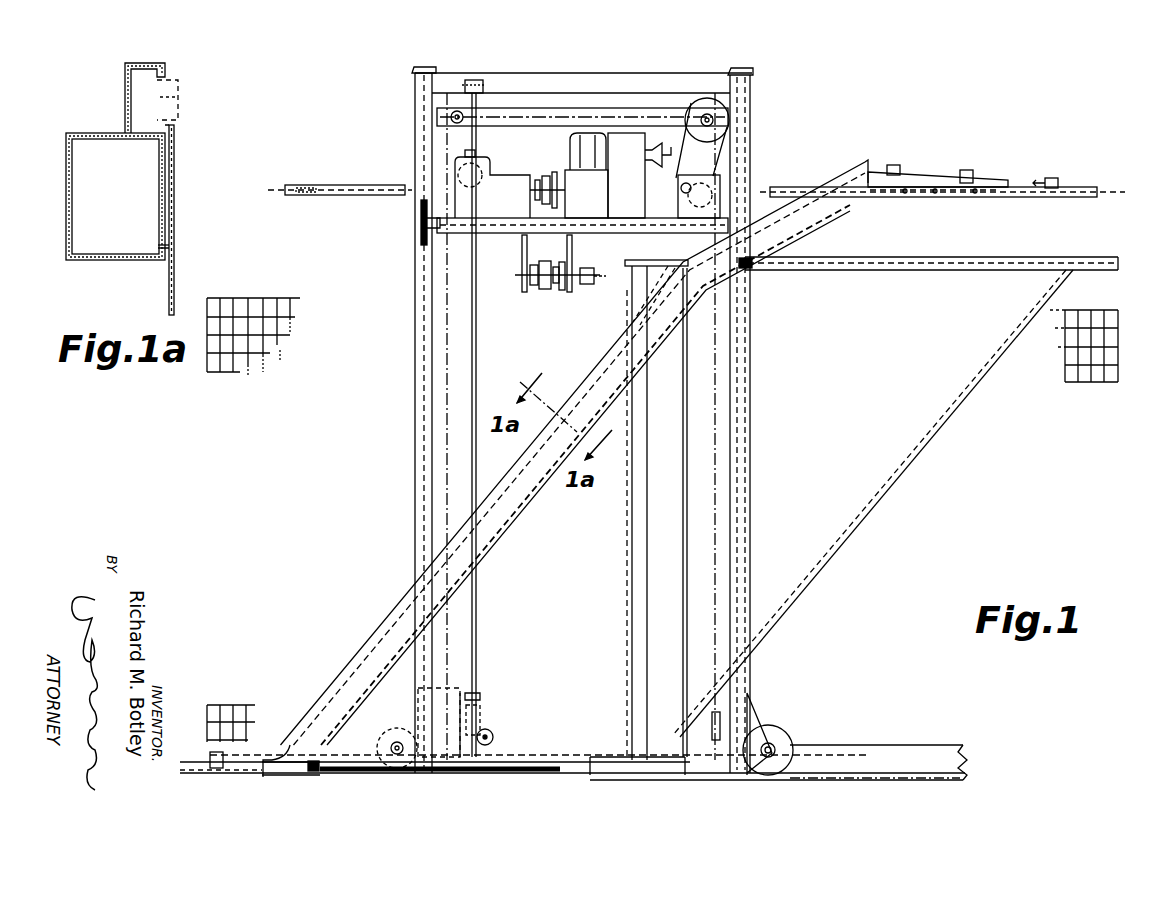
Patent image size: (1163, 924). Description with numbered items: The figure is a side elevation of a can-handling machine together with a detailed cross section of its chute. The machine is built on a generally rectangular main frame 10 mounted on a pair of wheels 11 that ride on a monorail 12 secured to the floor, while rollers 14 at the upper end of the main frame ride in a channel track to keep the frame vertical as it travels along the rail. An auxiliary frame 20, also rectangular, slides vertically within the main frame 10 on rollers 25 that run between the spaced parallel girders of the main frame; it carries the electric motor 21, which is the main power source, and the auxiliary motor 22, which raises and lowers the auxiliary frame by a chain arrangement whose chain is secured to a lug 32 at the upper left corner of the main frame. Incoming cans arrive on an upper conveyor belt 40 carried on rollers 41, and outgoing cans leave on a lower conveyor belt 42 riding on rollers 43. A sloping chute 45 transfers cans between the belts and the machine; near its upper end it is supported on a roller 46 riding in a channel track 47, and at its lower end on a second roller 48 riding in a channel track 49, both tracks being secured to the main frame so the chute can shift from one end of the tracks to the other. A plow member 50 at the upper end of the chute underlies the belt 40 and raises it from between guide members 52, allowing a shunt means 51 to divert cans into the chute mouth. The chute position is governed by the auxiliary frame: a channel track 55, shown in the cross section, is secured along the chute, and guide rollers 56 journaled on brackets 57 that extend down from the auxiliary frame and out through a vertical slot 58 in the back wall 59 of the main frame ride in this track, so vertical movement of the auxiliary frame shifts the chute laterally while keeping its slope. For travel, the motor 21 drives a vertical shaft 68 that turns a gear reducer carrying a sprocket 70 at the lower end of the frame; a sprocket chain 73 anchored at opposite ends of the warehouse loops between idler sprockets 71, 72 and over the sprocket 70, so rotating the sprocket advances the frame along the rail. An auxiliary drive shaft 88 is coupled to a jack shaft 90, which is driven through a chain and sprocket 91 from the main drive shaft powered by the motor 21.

In FIG. 1, the main frame 10 is at (552, 423).
In FIG. 1, the wheels 11 is at (600, 728).
In FIG. 1, the monorail 12 is at (573, 781).
In FIG. 1, the rollers 14 is at (576, 57).
In FIG. 1, the auxiliary frame 20 is at (582, 190).
In FIG. 1, the electric motor 21 is at (563, 175).
In FIG. 1, the auxiliary motor 22 is at (687, 158).
In FIG. 1, the rollers 25 is at (403, 225).
In FIG. 1, the lug 32 is at (490, 96).
In FIG. 1, the upper conveyor belt 40 is at (712, 168).
In FIG. 1, the rollers 41 is at (935, 209).
In FIG. 1, the lower conveyor belt 42 is at (208, 736).
In FIG. 1, the rollers 43 is at (227, 792).
In FIG. 1A, the sloping chute 45 is at (105, 219).
In FIG. 1, the sloping chute 45 is at (563, 475).
In FIG. 1, the roller 46 is at (769, 282).
In FIG. 1, the channel track 47 is at (931, 250).
In FIG. 1, the second roller 48 is at (335, 745).
In FIG. 1, the channel track 49 is at (540, 727).
In FIG. 1, the plow member 50 is at (934, 161).
In FIG. 1, the shunt means 51 is at (938, 151).
In FIG. 1, the guide members 52 is at (698, 167).
In FIG. 1A, the channel track 55 is at (145, 80).
In FIG. 1, the channel track 55 is at (575, 452).
In FIG. 1A, the guide rollers 56 is at (195, 100).
In FIG. 1, the guide rollers 56 is at (646, 285).
In FIG. 1, the brackets 57 is at (642, 251).
In FIG. 1, the vertical slot 58 is at (654, 520).
In FIG. 1A, the back wall 59 is at (192, 220).
In FIG. 1, the back wall 59 is at (800, 503).
In FIG. 1, the vertical shaft 68 is at (498, 425).
In FIG. 1, the sprocket 70 is at (494, 719).
In FIG. 1, the idler sprocket 71 is at (392, 789).
In FIG. 1, the idler sprocket 72 is at (505, 790).
In FIG. 1, the sprocket chain 73 is at (836, 763).
In FIG. 1, the auxiliary drive shaft 88 is at (601, 289).
In FIG. 1, the jack shaft 90 is at (557, 293).
In FIG. 1, the chain and sprocket 91 is at (547, 262).